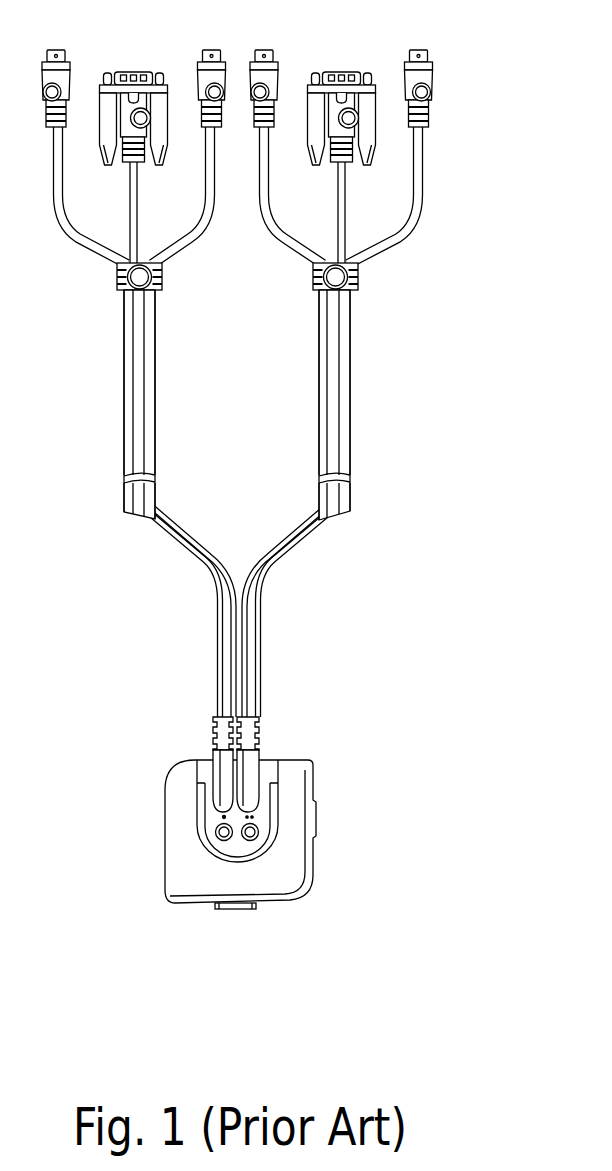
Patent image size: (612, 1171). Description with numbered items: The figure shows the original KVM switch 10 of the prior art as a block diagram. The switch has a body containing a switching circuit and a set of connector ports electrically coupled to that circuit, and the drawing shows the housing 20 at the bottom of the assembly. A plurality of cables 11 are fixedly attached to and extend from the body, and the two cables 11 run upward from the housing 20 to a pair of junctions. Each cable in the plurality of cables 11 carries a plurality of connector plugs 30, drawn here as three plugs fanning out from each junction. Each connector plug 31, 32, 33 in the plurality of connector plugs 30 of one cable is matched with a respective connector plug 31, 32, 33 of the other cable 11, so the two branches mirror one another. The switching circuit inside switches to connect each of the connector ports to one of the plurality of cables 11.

The original KVM switch 10 is at (277, 457).
The cables 11 is at (146, 354).
The switch box 20 is at (291, 768).
The connector plugs 30 is at (277, 152).
The connector plug 31 is at (141, 86).
The connector plug 32 is at (53, 65).
The connector plug 33 is at (210, 50).